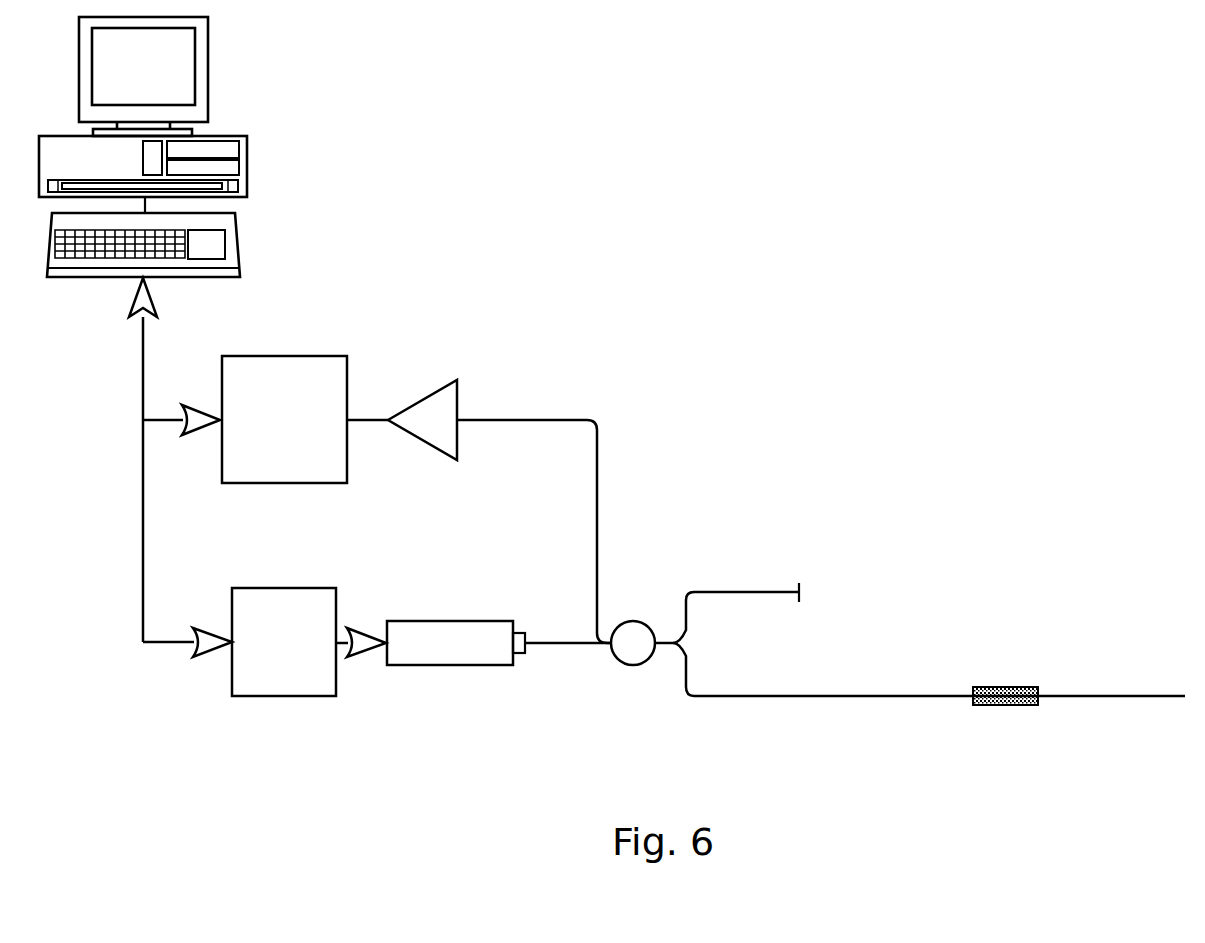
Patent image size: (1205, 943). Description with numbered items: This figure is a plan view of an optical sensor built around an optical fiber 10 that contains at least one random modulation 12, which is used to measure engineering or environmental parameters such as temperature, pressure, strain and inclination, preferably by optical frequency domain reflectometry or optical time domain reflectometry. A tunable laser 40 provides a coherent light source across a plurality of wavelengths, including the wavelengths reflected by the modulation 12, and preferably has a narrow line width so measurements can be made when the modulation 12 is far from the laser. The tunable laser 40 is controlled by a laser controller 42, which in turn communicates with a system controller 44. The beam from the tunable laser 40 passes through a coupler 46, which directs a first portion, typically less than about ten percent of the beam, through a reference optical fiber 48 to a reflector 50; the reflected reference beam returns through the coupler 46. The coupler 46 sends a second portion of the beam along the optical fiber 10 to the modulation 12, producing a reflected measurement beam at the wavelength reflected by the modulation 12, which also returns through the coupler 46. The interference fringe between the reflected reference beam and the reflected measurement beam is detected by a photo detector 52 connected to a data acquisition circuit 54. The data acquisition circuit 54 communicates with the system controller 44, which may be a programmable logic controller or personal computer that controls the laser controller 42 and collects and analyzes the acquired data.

The optical fiber 10 is at (737, 697).
The random modulation 12 is at (1002, 705).
The tunable laser 40 is at (443, 665).
The laser controller 42 is at (277, 696).
The system controller 44 is at (208, 54).
The coupler 46 is at (632, 665).
The reference optical fiber 48 is at (738, 592).
The reflector 50 is at (797, 585).
The photo detector 52 is at (422, 398).
The data acquisition circuit 54 is at (287, 356).